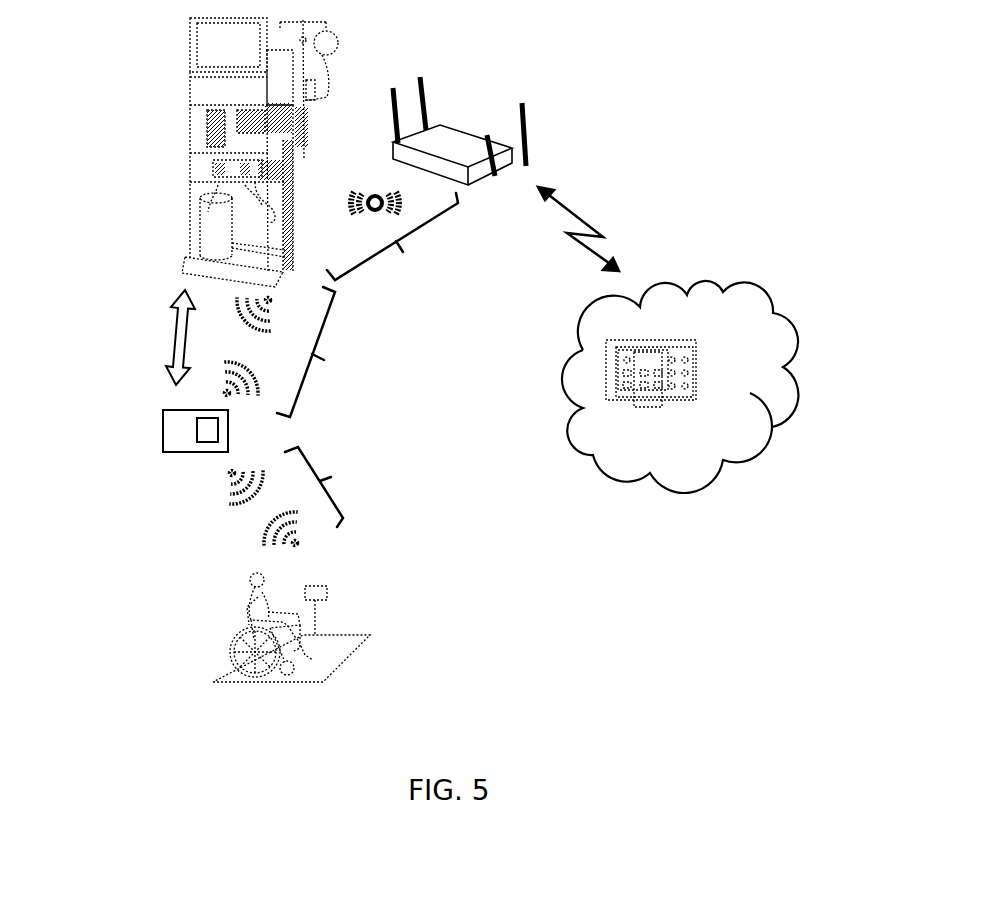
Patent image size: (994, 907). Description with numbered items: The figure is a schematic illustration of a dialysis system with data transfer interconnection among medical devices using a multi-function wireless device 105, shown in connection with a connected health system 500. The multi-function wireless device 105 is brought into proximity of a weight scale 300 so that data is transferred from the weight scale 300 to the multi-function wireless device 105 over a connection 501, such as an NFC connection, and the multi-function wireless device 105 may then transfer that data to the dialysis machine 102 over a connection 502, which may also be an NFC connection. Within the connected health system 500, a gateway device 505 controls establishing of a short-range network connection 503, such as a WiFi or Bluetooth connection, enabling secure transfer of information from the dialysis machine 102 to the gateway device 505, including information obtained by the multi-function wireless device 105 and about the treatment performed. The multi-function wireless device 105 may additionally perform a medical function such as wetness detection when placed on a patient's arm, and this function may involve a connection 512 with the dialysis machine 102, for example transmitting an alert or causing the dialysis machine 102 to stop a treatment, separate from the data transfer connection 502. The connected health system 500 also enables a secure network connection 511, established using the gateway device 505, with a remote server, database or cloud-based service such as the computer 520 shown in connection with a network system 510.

The dialysis machine 102 is at (190, 118).
The multi-function wireless device 105 is at (162, 432).
The weight scale 300 is at (317, 623).
The connected health system 500 is at (680, 160).
The connection 501 is at (329, 487).
The connection 502 is at (323, 352).
The short-range network connection 503 is at (392, 239).
The gateway device 505 is at (447, 137).
The network system 510 is at (697, 456).
The secure network connection 511 is at (597, 230).
The connection 512 is at (173, 337).
The computer 520 is at (695, 375).